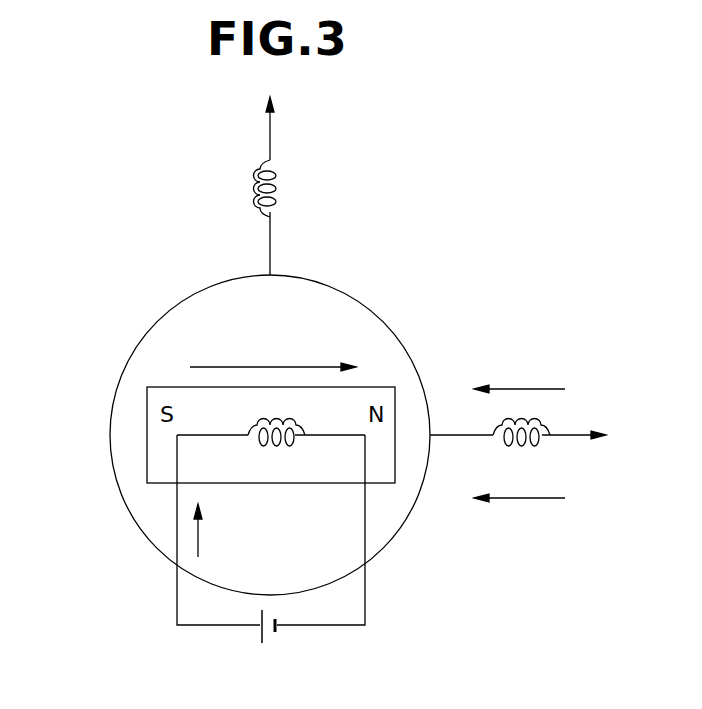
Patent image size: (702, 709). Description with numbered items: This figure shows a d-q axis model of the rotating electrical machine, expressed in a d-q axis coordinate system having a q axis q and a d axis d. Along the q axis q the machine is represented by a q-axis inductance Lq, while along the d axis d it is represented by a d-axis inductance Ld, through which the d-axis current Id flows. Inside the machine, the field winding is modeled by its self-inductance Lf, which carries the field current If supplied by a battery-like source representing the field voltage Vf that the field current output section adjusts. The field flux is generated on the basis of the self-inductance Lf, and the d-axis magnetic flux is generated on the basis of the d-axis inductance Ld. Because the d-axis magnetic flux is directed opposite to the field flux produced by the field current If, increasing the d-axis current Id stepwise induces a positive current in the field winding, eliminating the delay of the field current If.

The q axis q is at (299, 186).
The d axis d is at (525, 420).
The q-axis inductance Lq is at (285, 188).
The d-axis inductance Ld is at (521, 445).
The self-inductance of the field winding Lf is at (271, 446).
The field voltage Vf is at (248, 634).
The field current If is at (210, 530).
The d-axis current Id is at (519, 511).